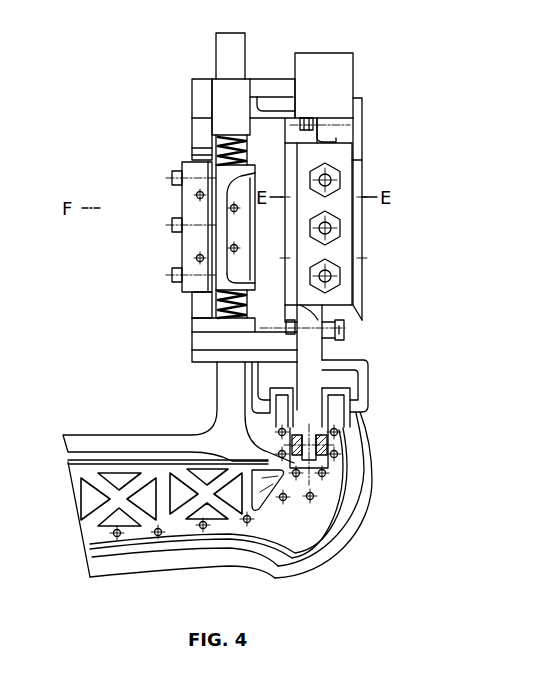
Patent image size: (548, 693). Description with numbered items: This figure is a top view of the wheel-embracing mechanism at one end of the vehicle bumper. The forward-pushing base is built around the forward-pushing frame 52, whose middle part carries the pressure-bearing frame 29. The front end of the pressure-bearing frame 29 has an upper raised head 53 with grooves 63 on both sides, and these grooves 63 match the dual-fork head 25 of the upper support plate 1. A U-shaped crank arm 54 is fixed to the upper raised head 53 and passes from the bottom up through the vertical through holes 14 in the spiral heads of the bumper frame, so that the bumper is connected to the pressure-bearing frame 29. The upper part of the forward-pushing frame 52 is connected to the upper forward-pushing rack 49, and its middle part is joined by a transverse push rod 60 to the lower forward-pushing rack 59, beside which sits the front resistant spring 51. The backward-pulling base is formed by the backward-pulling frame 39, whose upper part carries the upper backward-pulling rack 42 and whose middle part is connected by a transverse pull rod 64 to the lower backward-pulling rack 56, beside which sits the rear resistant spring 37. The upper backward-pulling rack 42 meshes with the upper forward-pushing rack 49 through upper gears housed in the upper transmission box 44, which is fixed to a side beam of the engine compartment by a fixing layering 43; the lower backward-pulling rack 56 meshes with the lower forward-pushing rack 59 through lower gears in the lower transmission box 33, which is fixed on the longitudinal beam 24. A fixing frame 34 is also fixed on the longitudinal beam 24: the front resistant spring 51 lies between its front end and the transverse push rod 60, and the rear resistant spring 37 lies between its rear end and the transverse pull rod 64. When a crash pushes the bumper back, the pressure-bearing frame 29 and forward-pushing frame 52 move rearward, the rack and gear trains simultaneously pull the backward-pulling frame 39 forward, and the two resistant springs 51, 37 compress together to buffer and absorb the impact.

The upper support plate 1 is at (232, 522).
The through hole 14 is at (320, 462).
The longitudinal beam 24 is at (228, 52).
The dual-fork head 25 is at (293, 420).
The pressure-bearing frame 29 is at (366, 372).
The lower transmission box 33 is at (205, 173).
The fixing frame 34 is at (220, 220).
The rear resistant spring 37 is at (232, 133).
The backward-pulling frame 39 is at (338, 102).
The upper backward-pulling rack 42 is at (345, 138).
The fixing layering 43 is at (343, 190).
The upper transmission box 44 is at (358, 243).
The upper forward-pushing rack 49 is at (300, 310).
The front resistant spring 51 is at (222, 287).
The forward-pushing frame 52 is at (318, 340).
The upper raised head 53 is at (318, 486).
The U-shaped crank arm 54 is at (340, 455).
The lower backward-pulling rack 56 is at (205, 132).
The lower forward-pushing rack 59 is at (203, 308).
The transverse push rod 60 is at (238, 349).
The groove 63 is at (340, 393).
The transverse pull rod 64 is at (267, 92).